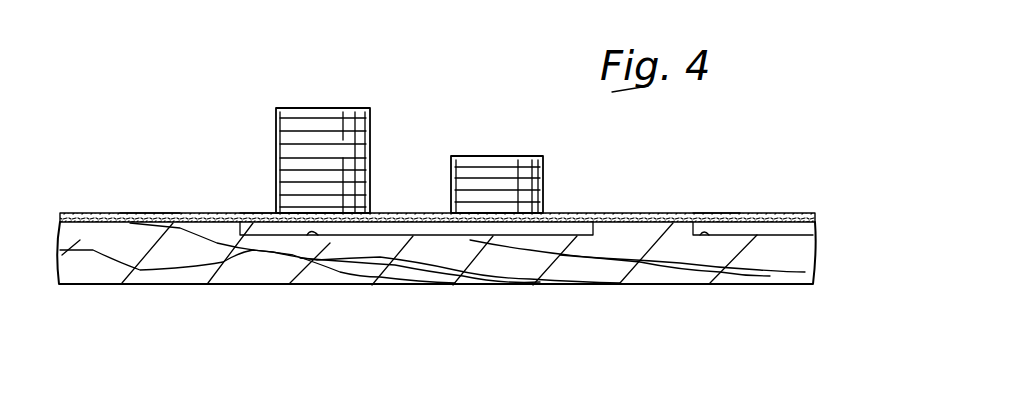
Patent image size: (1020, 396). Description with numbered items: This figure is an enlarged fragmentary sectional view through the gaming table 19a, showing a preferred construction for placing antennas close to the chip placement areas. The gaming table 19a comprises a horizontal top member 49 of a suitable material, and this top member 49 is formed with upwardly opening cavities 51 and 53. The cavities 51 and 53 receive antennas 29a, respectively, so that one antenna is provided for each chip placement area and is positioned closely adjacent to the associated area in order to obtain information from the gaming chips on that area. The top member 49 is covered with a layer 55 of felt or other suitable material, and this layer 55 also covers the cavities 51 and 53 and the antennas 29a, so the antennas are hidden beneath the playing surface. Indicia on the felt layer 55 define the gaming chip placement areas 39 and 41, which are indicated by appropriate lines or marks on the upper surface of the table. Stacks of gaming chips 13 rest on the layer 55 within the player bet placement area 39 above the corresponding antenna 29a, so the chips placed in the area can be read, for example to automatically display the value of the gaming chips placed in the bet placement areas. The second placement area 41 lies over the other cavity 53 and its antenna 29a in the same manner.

The gaming chips 13 is at (451, 156).
The gaming table 19a is at (66, 204).
The antennas 29a is at (466, 228).
The player bet placement area 39 is at (256, 213).
The gaming chip placement area 41 is at (716, 213).
The horizontal top member 49 is at (96, 272).
The cavity 51 is at (317, 237).
The cavity 53 is at (698, 237).
The layer 55 is at (147, 213).